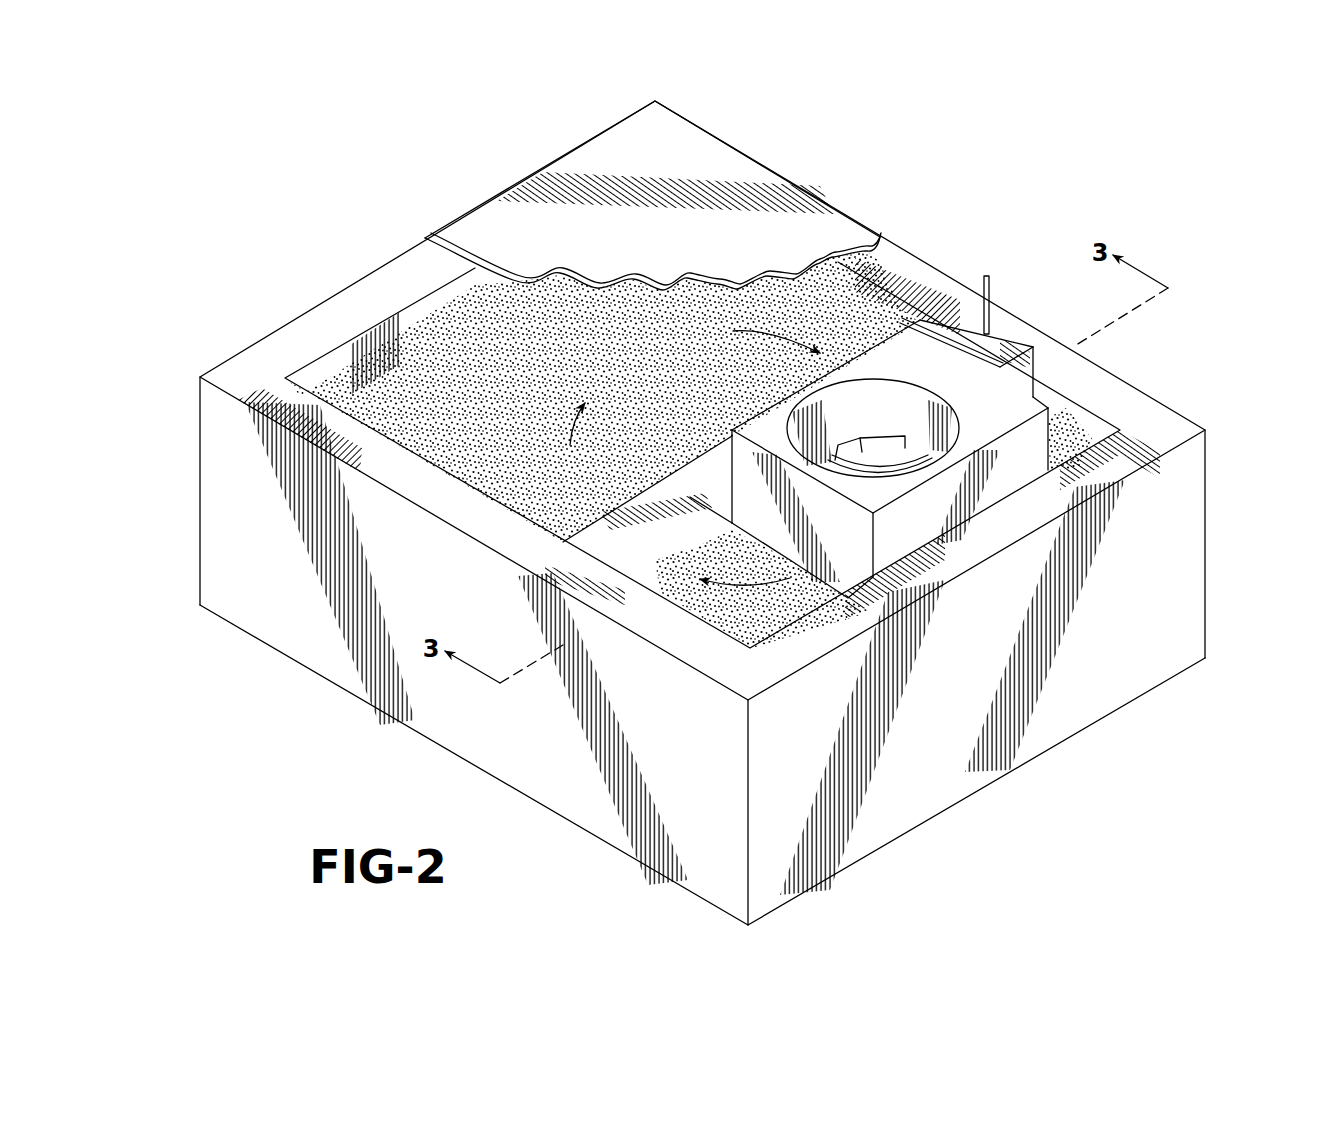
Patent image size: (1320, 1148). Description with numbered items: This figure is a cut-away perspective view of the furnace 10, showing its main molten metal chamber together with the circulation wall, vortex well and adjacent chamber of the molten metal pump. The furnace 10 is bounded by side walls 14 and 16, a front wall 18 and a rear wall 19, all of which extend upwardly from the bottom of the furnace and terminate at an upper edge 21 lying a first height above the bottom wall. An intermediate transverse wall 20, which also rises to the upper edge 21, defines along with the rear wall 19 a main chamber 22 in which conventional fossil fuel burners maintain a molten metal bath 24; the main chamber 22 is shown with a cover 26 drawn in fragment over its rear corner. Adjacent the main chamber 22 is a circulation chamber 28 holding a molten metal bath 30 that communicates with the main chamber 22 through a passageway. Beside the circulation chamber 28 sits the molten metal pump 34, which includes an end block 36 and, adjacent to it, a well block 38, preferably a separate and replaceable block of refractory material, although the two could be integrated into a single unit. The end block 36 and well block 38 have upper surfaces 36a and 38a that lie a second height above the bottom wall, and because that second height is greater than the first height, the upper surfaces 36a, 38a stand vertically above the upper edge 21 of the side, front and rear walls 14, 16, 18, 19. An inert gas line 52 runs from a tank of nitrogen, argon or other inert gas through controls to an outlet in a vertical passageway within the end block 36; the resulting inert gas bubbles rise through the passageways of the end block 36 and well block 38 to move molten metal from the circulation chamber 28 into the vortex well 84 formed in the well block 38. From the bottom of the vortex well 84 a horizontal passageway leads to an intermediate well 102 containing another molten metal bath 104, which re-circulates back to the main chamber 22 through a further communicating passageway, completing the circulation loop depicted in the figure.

The furnace 10 is at (425, 762).
The side wall 14 is at (575, 790).
The side wall 16 is at (1158, 395).
The front wall 18 is at (1097, 685).
The rear wall 19 is at (308, 312).
The intermediate transverse wall 20 is at (600, 530).
The upper edge 21 is at (280, 336).
The main chamber 22 is at (418, 310).
The molten metal bath 24 is at (430, 365).
The cover 26 is at (703, 150).
The circulation chamber 28 is at (1075, 416).
The molten metal bath 30 is at (1068, 456).
The molten metal pump 34 is at (1013, 318).
The end block 36 is at (955, 322).
The upper surface 36a is at (988, 348).
The well block 38 is at (900, 362).
The upper surface 38a is at (760, 425).
The inert gas line 52 is at (992, 286).
The vortex well 84 is at (872, 410).
The intermediate well 102 is at (640, 556).
The molten metal bath 104 is at (740, 625).